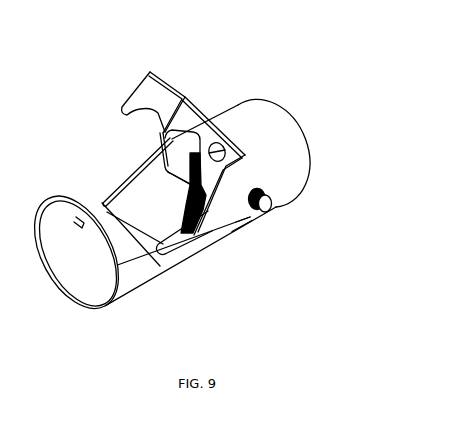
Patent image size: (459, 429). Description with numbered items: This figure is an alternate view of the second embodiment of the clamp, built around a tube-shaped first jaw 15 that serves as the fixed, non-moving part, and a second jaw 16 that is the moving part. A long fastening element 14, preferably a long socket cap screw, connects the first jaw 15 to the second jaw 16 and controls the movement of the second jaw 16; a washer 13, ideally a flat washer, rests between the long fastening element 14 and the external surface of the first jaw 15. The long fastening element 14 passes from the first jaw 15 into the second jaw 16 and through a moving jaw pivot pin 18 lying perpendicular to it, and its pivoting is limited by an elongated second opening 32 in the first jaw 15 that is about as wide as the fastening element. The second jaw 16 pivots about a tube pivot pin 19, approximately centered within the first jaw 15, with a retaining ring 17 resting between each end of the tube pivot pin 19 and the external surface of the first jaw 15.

The washer 13 is at (165, 262).
The long fastening element 14 is at (201, 257).
The first jaw 15 is at (245, 229).
The second jaw 16 is at (191, 106).
The retaining ring 17 is at (250, 218).
The moving jaw pivot pin 18 is at (229, 150).
The tube pivot pin 19 is at (271, 205).
The second opening 32 is at (113, 190).